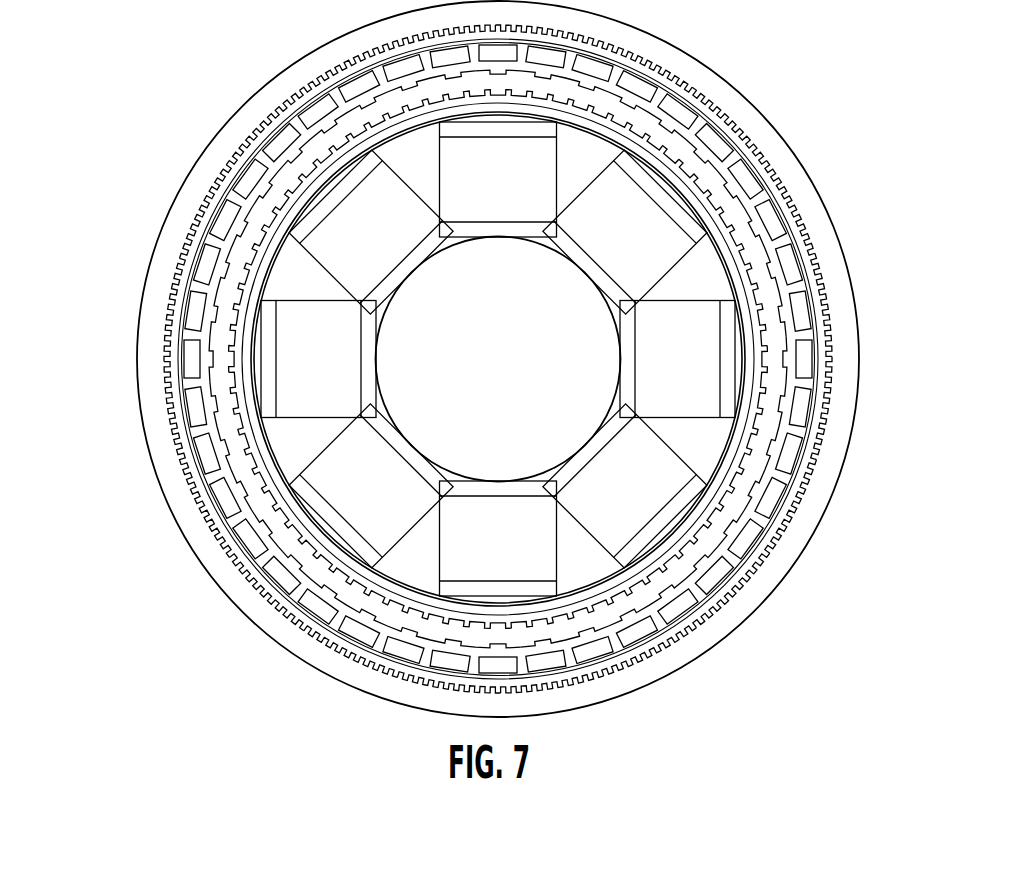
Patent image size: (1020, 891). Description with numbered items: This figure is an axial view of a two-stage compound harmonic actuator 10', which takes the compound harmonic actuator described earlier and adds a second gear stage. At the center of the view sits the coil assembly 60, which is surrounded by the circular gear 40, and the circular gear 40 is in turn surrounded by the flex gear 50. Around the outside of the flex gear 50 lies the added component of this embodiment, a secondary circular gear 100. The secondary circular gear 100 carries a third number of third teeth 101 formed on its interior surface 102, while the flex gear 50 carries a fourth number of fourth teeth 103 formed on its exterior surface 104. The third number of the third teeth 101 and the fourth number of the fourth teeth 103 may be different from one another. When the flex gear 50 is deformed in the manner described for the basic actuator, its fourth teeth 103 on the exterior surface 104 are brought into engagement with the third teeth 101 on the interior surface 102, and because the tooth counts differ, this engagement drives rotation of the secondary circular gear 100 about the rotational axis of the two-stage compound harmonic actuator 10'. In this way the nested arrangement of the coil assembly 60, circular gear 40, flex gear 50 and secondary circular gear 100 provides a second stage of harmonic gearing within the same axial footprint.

The two-stage compound harmonic actuator 10' is at (462, 359).
The secondary circular gear 100 is at (157, 233).
The flex gear 50 is at (793, 210).
The circular gear 40 is at (763, 321).
The third teeth 101 is at (167, 377).
The interior surface 102 is at (190, 458).
The fourth teeth 103 is at (270, 568).
The exterior surface 104 is at (290, 615).
The coil assembly 60 is at (592, 283).